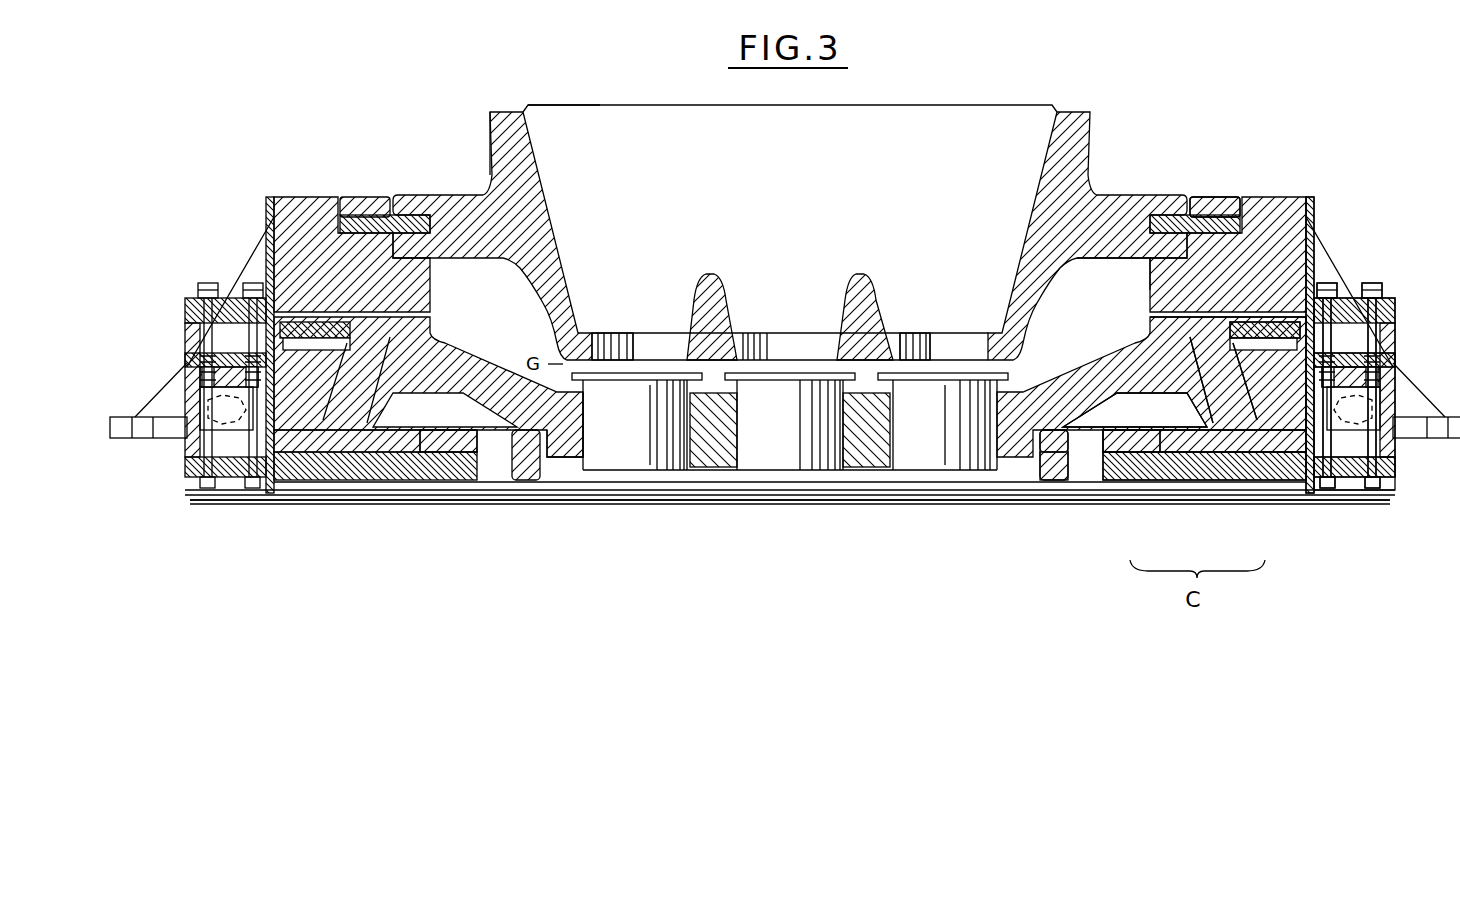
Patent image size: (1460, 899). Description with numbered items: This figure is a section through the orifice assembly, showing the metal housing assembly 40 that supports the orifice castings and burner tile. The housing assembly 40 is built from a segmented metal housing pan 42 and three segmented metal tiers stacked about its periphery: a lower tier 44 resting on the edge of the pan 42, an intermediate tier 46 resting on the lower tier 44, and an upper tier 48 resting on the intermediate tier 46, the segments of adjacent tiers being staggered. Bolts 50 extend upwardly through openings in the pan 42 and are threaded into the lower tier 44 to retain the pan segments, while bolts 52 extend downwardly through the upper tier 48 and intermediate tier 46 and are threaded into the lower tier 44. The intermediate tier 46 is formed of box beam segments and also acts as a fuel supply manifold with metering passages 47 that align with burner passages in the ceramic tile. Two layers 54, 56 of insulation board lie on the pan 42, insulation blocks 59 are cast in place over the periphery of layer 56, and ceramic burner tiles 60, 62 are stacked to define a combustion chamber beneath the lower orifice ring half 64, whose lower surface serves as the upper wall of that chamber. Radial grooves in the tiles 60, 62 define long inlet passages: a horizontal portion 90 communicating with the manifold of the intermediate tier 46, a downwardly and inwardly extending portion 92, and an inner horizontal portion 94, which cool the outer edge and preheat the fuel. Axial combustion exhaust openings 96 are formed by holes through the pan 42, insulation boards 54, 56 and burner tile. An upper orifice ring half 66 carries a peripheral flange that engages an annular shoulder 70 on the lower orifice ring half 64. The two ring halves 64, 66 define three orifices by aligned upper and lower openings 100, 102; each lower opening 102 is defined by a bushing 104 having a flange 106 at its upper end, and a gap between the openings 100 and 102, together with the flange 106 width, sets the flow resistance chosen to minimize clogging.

The metal housing assembly 40 is at (1324, 188).
The metal housing pan 42 is at (1290, 492).
The lower tier 44 is at (1396, 450).
The intermediate tier 46 is at (1396, 342).
The metering passages 47 is at (1316, 348).
The upper tier 48 is at (1326, 232).
The bolts 50 is at (1360, 493).
The bolts 52 is at (1327, 283).
The insulation board layer 54 is at (1043, 478).
The insulation board layer 56 is at (1033, 470).
The insulation blocks 59 is at (1277, 443).
The ceramic burner tile 60 is at (1217, 373).
The ceramic burner tile 62 is at (1238, 331).
The lower orifice ring half 64 is at (1213, 200).
The upper orifice ring half 66 is at (490, 133).
The annular shoulder 70 is at (1160, 253).
The horizontal portion 90 is at (1273, 345).
The downwardly and inwardly extending portion 92 is at (1198, 397).
The horizontal portion 94 is at (1146, 413).
The axial combustion exhaust openings 96 is at (495, 483).
The upper openings 100 is at (677, 340).
The lower openings 102 is at (593, 442).
The bushing 104 is at (735, 474).
The flange 106 is at (808, 373).